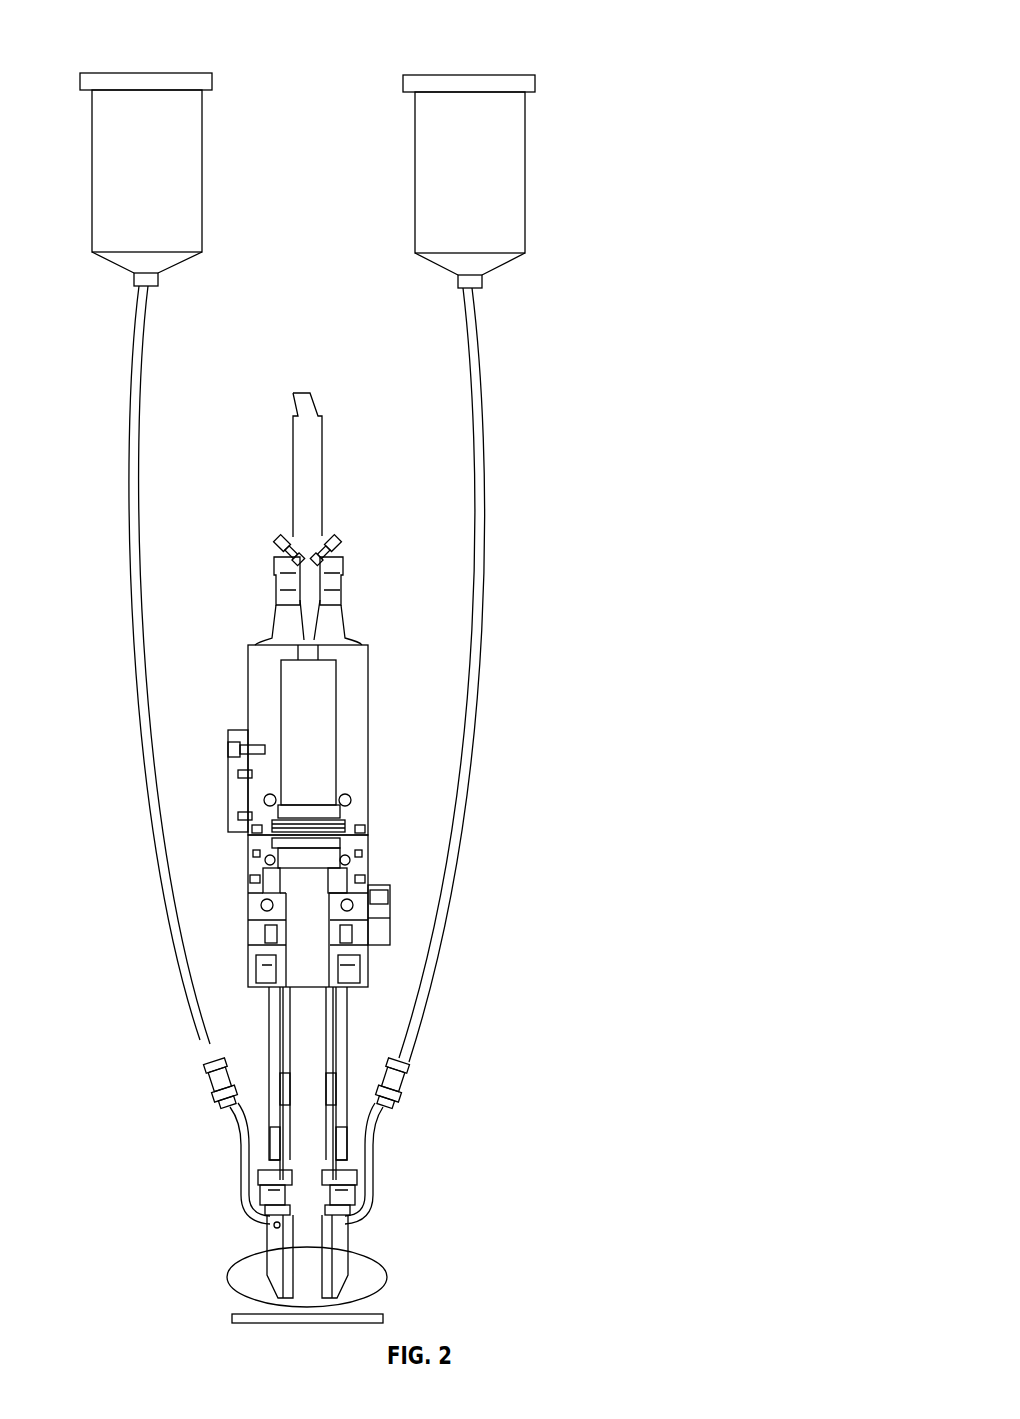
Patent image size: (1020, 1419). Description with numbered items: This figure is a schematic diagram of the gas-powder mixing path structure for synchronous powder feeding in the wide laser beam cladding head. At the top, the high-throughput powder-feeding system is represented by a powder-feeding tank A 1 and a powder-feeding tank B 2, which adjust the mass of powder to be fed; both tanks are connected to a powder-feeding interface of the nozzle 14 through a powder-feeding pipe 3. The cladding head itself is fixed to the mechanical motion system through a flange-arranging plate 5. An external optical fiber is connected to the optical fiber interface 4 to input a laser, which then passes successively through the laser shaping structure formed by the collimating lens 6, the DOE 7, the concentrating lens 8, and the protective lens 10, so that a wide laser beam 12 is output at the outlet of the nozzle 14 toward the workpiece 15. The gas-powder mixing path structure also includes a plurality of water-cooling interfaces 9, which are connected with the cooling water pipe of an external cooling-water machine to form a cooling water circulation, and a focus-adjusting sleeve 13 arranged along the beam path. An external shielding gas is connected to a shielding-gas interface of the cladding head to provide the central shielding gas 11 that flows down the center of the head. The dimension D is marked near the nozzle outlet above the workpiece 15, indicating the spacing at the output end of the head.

The powder-feeding tank A 1 is at (172, 121).
The powder-feeding tank B 2 is at (483, 183).
The powder-feeding pipe 3 is at (480, 360).
The optical fiber interface 4 is at (330, 585).
The flange-arranging plate 5 is at (240, 800).
The collimating lens 6 is at (315, 827).
The DOE 7 is at (305, 847).
The concentrating lens 8 is at (352, 866).
The water-cooling interface 9 is at (388, 893).
The protective lens 10 is at (372, 925).
The central shielding gas 11 is at (330, 1058).
The wide laser beam 12 is at (311, 1107).
The focus-adjusting sleeve 13 is at (343, 1141).
The needle spacing D is at (360, 1263).
The nozzle 14 is at (337, 1280).
The workpiece 15 is at (380, 1317).